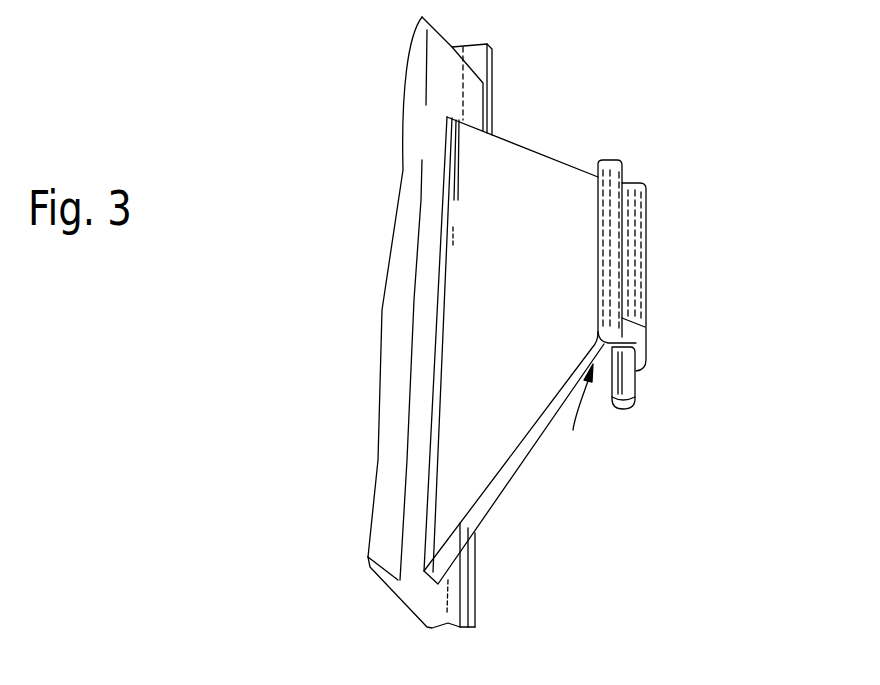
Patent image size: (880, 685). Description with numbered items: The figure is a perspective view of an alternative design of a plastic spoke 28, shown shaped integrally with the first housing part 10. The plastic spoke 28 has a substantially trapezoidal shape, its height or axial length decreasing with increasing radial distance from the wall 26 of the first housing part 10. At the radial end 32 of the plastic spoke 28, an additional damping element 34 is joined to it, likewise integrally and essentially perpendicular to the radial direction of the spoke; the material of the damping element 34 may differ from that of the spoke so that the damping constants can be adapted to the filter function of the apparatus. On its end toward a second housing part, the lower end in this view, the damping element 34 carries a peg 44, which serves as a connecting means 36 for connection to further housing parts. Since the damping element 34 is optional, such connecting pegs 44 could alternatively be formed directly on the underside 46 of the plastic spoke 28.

The first housing part 10 is at (441, 84).
The wall 26 is at (403, 338).
The plastic spoke 28 is at (540, 197).
The damping element 34 is at (630, 245).
The peg 44 is at (636, 372).
The connecting means 36 is at (623, 378).
The underside 46 is at (497, 485).
The radial end 32 is at (578, 423).